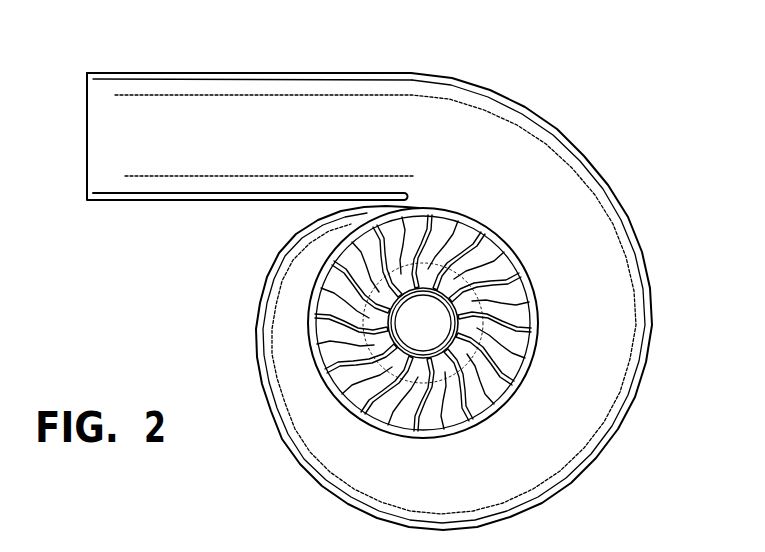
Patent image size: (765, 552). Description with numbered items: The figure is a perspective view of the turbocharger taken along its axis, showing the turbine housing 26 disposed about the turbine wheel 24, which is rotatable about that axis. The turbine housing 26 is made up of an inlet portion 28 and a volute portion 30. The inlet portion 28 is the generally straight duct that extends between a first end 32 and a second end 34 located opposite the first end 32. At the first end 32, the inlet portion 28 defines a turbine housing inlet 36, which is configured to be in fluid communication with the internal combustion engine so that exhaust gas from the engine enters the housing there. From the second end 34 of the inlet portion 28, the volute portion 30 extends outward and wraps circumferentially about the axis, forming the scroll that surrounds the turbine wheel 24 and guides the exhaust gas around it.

The turbine wheel 24 is at (422, 323).
The turbine housing 26 is at (544, 86).
The inlet portion 28 is at (267, 117).
The volute portion 30 is at (556, 418).
The first end 32 is at (107, 125).
The second end 34 is at (410, 132).
The turbine housing inlet 36 is at (85, 152).